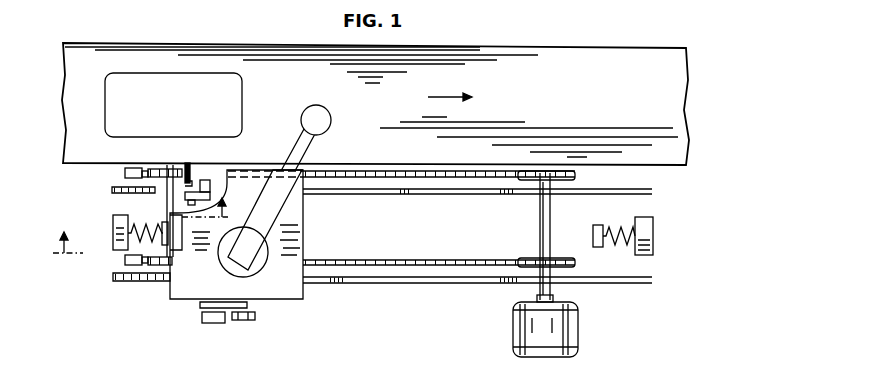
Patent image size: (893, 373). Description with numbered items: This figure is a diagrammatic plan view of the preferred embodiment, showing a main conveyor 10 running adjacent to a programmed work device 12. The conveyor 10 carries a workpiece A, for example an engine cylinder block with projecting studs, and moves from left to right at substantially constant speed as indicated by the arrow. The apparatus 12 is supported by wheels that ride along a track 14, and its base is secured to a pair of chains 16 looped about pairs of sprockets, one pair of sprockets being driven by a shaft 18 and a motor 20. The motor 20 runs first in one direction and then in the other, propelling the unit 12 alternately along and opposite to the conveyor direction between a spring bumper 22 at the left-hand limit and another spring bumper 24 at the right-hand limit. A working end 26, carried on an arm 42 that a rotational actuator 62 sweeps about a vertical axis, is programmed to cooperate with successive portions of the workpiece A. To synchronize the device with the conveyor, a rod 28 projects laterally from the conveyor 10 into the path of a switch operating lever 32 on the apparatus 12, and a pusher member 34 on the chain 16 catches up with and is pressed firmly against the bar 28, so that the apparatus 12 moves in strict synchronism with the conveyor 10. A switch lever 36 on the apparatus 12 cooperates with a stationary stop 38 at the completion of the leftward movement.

The main conveyor 10 is at (303, 53).
The workpiece A is at (157, 73).
The working end 26 is at (330, 113).
The programmed work device 12 is at (303, 290).
The arm 42 is at (280, 200).
The rotational actuator 62 is at (228, 262).
The rod 28 is at (196, 166).
The operating lever 32 is at (212, 191).
The pusher member 34 is at (125, 173).
The spring bumper 22 is at (162, 222).
The chains 16 is at (430, 178).
The track 14 is at (393, 194).
The shaft 18 is at (540, 220).
The motor 20 is at (568, 328).
The spring bumper 24 is at (655, 227).
The stationary stop 38 is at (205, 320).
The switch lever 36 is at (245, 321).